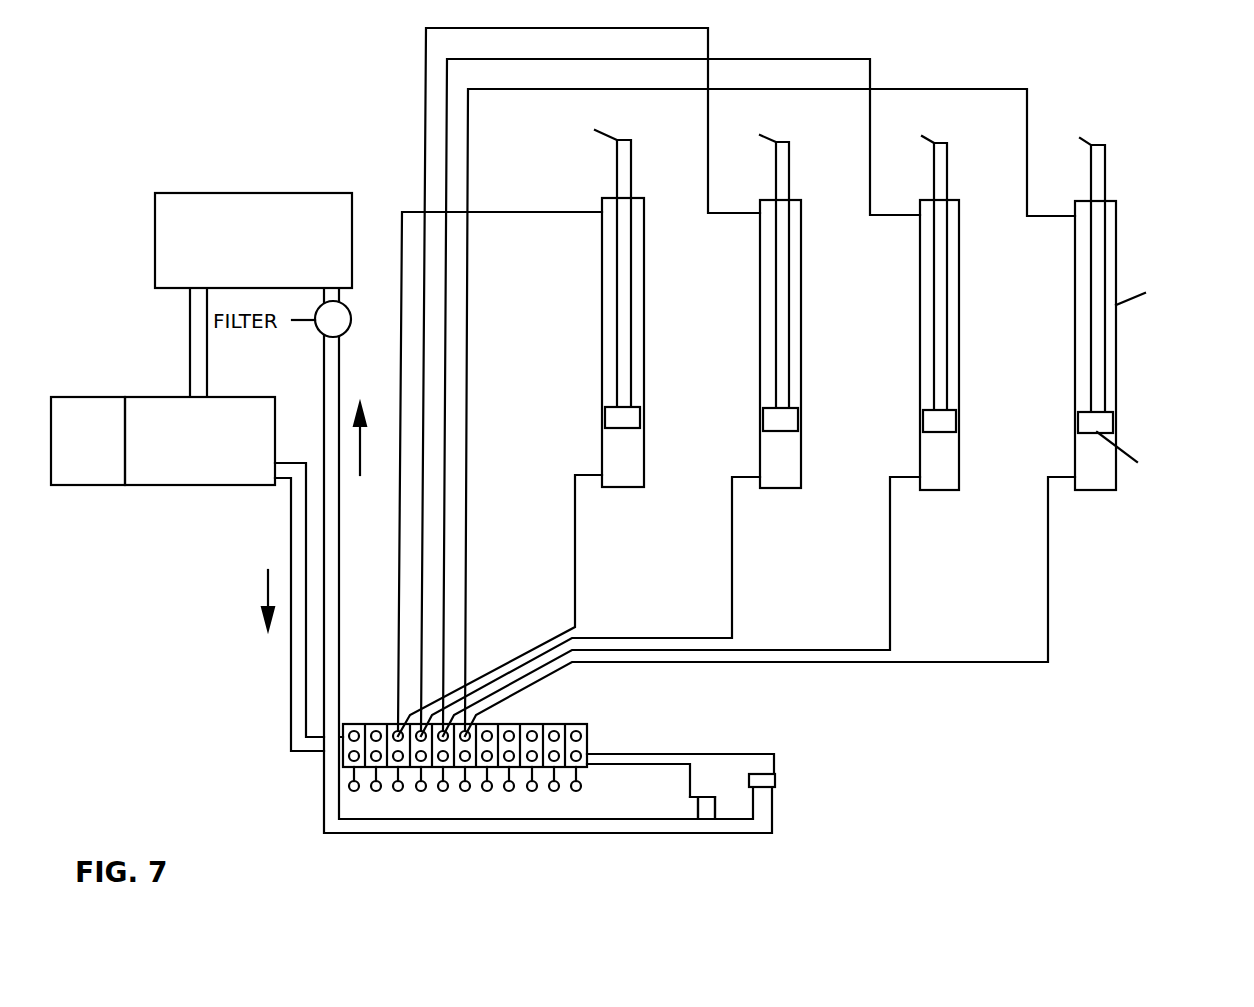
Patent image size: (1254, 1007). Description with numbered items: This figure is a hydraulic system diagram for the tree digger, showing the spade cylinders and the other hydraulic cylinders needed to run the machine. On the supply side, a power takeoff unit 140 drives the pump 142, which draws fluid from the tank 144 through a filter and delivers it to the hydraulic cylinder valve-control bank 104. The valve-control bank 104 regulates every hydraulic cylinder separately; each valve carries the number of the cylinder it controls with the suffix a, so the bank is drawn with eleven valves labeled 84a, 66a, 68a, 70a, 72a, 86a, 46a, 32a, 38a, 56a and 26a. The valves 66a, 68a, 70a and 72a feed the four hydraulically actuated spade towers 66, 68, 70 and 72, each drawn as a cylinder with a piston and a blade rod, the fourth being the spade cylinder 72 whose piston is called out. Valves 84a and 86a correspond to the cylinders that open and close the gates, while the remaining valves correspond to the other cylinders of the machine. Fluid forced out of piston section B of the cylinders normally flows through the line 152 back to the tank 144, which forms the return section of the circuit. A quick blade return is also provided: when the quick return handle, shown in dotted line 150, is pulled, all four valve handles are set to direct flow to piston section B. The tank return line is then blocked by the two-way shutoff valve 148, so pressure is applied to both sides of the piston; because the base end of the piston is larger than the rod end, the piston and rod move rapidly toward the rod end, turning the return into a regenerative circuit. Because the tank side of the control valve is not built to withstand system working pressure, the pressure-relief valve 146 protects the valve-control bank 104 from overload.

The tank 144 is at (175, 288).
The power takeoff unit 140 is at (108, 485).
The pump 142 is at (210, 485).
The line 152 is at (540, 212).
The hydraulic actuated spade tower 66 is at (644, 450).
The hydraulic actuated spade tower 68 is at (801, 450).
The hydraulic actuated spade tower 70 is at (959, 450).
The hydraulic actuated spade tower 72 is at (1113, 428).
The quick return handle 150 is at (376, 723).
The valve-control bank 104 is at (562, 708).
The pressure-relief valve 146 is at (690, 788).
The two-way shutoff valve 148 is at (776, 782).
The valve 84a is at (354, 791).
The valve 66a is at (376, 791).
The valve 68a is at (398, 791).
The valve 70a is at (421, 791).
The valve 72a is at (443, 791).
The valve 86a is at (465, 791).
The valve 46a is at (487, 791).
The valve 32a is at (509, 791).
The valve 38a is at (532, 791).
The valve 56a is at (554, 791).
The valve 26a is at (576, 791).